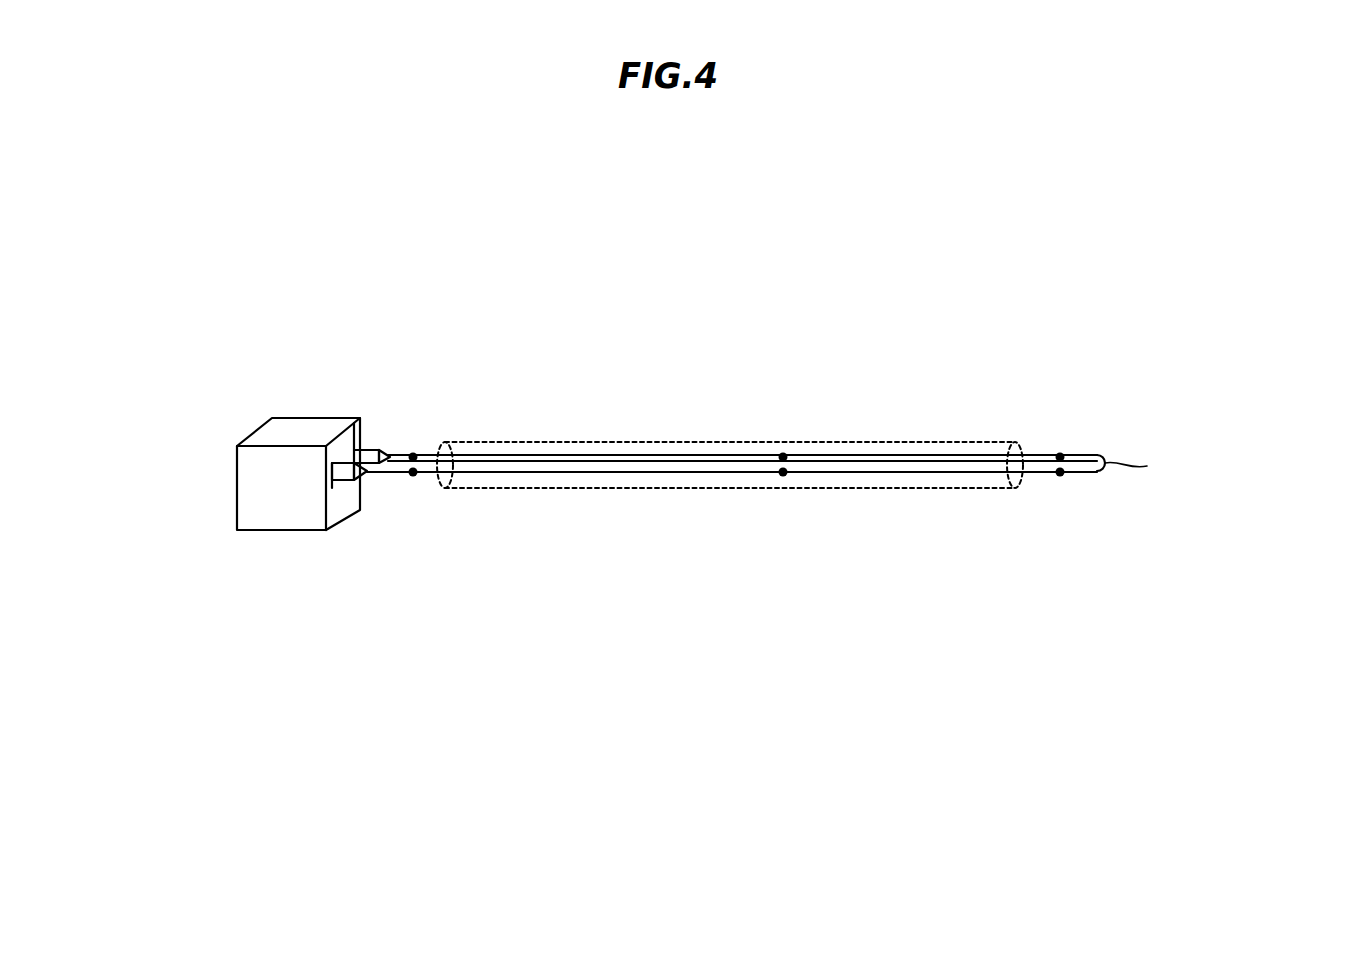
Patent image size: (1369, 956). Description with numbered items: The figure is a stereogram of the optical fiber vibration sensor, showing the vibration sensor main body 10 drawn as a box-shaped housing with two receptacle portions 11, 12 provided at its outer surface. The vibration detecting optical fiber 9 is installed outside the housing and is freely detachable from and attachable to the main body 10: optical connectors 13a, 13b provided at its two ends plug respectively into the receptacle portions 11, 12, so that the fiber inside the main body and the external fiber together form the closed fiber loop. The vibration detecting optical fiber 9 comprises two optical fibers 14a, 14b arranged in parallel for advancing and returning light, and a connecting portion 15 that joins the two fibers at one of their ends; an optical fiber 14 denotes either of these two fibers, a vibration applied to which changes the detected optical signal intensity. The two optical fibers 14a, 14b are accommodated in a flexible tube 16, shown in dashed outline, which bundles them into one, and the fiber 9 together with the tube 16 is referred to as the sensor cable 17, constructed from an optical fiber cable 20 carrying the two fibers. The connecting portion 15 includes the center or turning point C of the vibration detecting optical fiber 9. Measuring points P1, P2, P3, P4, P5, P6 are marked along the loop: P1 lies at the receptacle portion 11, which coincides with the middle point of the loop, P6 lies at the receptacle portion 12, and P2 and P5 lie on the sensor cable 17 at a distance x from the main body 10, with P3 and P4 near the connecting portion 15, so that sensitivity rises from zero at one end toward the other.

The vibration detecting optical fiber 9 is at (732, 437).
The vibration sensor main body 10 is at (237, 486).
The receptacle portion 11 is at (353, 445).
The receptacle portion 12 is at (332, 490).
The optical connector 13a is at (380, 449).
The optical connector 13b is at (362, 483).
The optical fiber 14 is at (732, 451).
The optical fiber 14a is at (562, 461).
The optical fiber 14b is at (696, 474).
The connecting portion 15 is at (1087, 454).
The flexible tube 16 is at (888, 441).
The sensor cable 17 is at (816, 456).
The optical fiber cable 20 is at (816, 456).
The measuring point P1 is at (413, 453).
The measuring point P2 is at (783, 453).
The measuring point P3 is at (1060, 453).
The measuring point P4 is at (1060, 476).
The measuring point P5 is at (783, 476).
The measuring point P6 is at (414, 476).
The center (turning point) C is at (1135, 463).